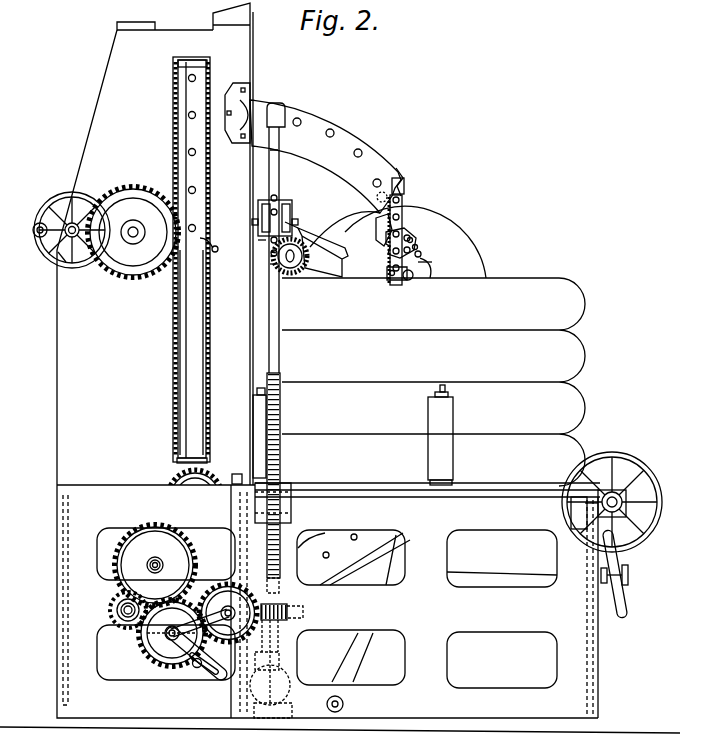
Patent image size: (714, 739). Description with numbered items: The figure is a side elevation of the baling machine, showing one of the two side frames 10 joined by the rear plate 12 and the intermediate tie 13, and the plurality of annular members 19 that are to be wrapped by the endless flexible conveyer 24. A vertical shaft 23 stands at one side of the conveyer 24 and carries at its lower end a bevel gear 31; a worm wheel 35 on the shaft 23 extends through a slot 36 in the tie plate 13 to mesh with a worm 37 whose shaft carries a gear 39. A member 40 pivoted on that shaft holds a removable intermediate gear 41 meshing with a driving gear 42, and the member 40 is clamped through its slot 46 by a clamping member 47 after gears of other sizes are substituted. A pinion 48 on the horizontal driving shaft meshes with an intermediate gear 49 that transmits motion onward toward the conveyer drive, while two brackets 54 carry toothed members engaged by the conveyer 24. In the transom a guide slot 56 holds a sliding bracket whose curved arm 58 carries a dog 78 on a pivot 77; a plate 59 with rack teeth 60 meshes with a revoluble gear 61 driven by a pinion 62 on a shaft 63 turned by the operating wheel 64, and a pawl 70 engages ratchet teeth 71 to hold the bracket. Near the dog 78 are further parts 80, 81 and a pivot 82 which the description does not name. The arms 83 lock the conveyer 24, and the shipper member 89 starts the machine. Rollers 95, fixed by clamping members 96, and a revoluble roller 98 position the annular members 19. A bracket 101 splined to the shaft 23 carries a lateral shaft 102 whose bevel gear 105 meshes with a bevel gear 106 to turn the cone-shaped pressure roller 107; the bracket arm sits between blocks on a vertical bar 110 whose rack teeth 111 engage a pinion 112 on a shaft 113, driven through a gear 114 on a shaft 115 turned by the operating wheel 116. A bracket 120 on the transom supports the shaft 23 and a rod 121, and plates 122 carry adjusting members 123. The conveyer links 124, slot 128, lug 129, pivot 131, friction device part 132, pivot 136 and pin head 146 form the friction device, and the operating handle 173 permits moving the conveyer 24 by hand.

The side frames 10 is at (582, 603).
The rear plate 12 is at (60, 515).
The intermediate tie 13 is at (248, 520).
The annular members 19 is at (556, 290).
The vertical shaft 23 is at (281, 155).
The endless flexible conveyer 24 is at (403, 222).
The bevel gear 31 is at (297, 655).
The worm wheel 35 is at (290, 614).
The slot 36 is at (218, 612).
The worm 37 is at (228, 583).
The gear 39 is at (279, 591).
The member 40 is at (186, 640).
The intermediate gear 41 is at (150, 638).
The driving gear 42 is at (112, 607).
The slot 46 is at (216, 684).
The clamping member 47 is at (197, 668).
The gear 48 is at (120, 545).
The intermediate gear 49 is at (165, 478).
The brackets 54 is at (337, 545).
The guide slot 56 is at (182, 346).
The curved arm 58 is at (325, 108).
The plate 59 is at (192, 92).
The rack teeth 60 is at (180, 135).
The revoluble gear 61 is at (127, 188).
The pinion 62 is at (70, 210).
The shaft 63 is at (60, 257).
The operating wheel 64 is at (40, 225).
The pawl 70 is at (217, 237).
The ratchet teeth 71 is at (207, 193).
The pivot 77 is at (383, 195).
The dog 78 is at (387, 245).
The lug 80 is at (408, 183).
The tab 81 is at (378, 226).
The pivot 82 is at (344, 705).
The arms 83 is at (398, 572).
The shipper member 89 is at (363, 570).
The rollers 95 is at (455, 418).
The clamping members 96 is at (445, 390).
The revoluble roller 98 is at (258, 420).
The bracket 101 is at (288, 230).
The lateral shaft 102 is at (272, 268).
The bevel gear 105 is at (305, 272).
The bevel gear 106 is at (263, 246).
The pressure roller 107 is at (330, 272).
The vertical bar 110 is at (282, 353).
The rack teeth 111 is at (280, 415).
The pinion 112 is at (279, 475).
The shaft 113 is at (512, 498).
The gear 114 is at (626, 505).
The shaft 115 is at (630, 548).
The operating wheel 116 is at (638, 478).
The bracket 120 is at (255, 112).
The rod 121 is at (279, 173).
The plates 122 is at (262, 210).
The adjusting member 123 is at (258, 220).
The links 124 is at (417, 247).
The slot 128 is at (412, 240).
The lug 129 is at (432, 262).
The pivot 131 is at (421, 255).
The part of friction device 132 is at (432, 265).
The pivot 136 is at (398, 280).
The head 146 is at (415, 282).
The operating handle 173 is at (630, 597).